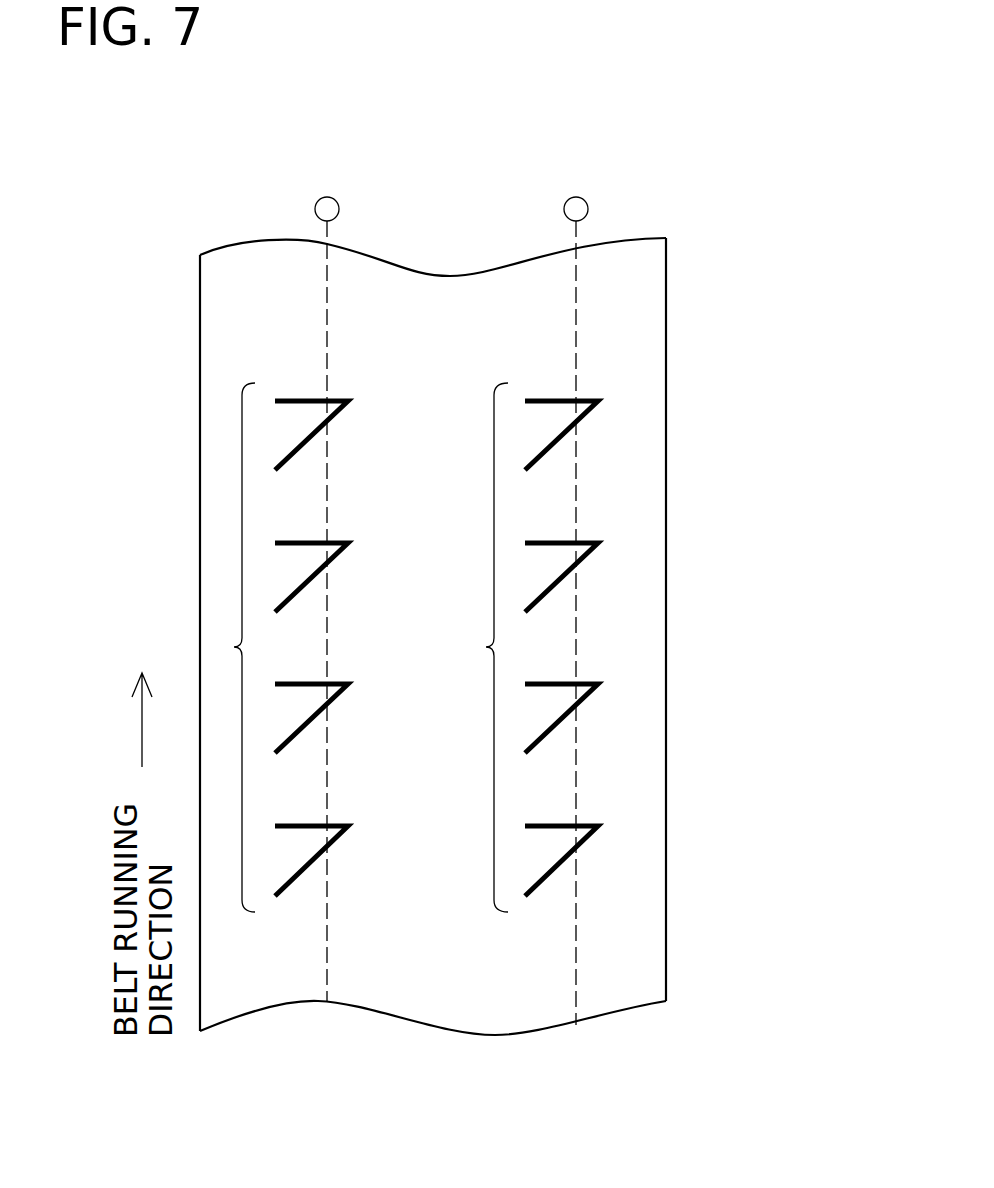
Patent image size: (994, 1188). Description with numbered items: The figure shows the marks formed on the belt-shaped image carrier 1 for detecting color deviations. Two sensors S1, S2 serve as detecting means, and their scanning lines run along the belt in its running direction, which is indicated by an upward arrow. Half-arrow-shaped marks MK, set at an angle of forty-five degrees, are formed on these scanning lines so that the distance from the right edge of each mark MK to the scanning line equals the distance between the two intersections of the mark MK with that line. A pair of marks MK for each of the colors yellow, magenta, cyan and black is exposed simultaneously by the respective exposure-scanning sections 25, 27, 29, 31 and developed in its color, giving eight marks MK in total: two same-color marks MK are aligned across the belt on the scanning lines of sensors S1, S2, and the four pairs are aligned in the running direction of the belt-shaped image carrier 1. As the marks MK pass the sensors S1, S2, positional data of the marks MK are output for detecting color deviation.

The belt-shaped image carrier 1 is at (222, 320).
The sensor S1 is at (326, 580).
The sensor S2 is at (576, 592).
The mark MK is at (234, 647).
The exposure-scanning section 25 is at (710, 442).
The exposure-scanning section 27 is at (710, 585).
The exposure-scanning section 29 is at (710, 727).
The exposure-scanning section 31 is at (710, 868).